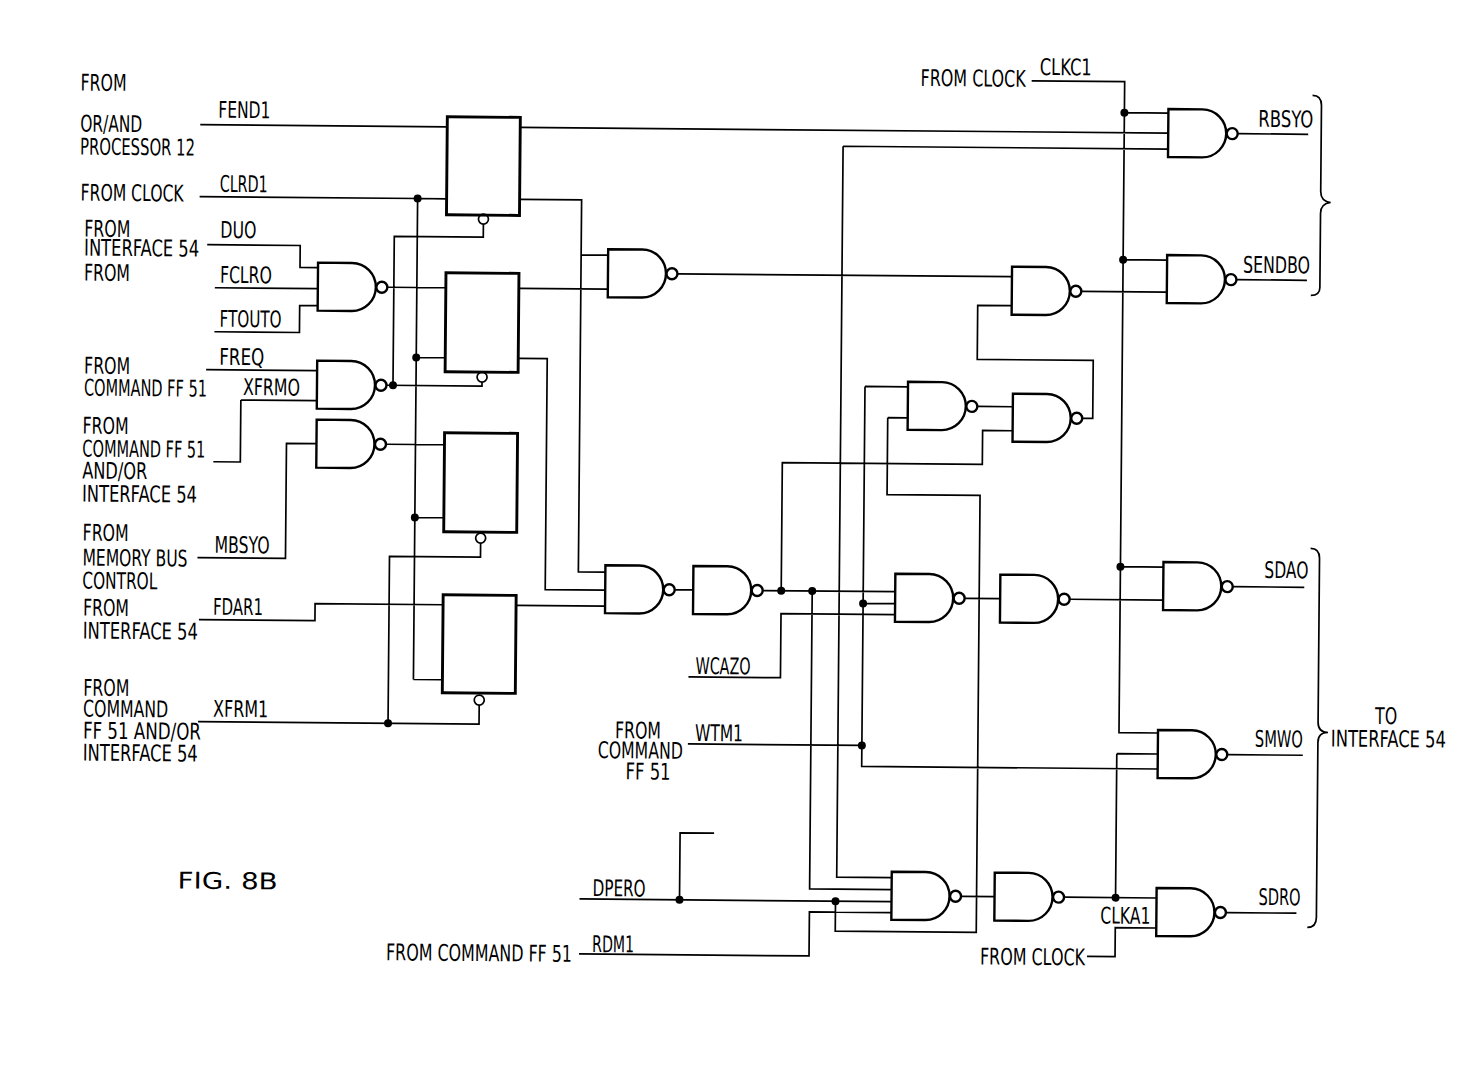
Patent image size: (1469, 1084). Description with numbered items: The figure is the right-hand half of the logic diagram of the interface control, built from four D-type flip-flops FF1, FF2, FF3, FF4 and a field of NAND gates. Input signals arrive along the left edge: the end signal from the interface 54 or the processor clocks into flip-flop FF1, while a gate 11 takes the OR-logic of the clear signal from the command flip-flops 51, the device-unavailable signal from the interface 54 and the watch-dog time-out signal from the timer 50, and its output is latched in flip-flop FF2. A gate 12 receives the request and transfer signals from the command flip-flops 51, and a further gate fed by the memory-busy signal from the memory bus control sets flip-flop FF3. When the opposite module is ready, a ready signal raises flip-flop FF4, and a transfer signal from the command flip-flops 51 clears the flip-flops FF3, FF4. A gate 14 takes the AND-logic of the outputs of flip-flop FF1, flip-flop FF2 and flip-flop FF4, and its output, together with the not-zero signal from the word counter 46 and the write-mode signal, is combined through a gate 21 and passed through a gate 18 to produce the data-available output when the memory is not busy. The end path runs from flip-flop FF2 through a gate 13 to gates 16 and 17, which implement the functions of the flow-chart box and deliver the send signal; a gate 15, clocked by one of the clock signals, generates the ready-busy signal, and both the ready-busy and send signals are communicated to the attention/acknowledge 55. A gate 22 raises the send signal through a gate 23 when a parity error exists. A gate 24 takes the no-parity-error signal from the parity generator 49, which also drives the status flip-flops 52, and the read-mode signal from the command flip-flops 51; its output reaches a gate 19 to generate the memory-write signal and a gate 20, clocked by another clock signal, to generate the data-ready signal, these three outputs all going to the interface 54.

The gate 11 is at (321, 268).
The gate 12 is at (346, 353).
The gate 13 is at (633, 256).
The gate 14 is at (624, 572).
The gate 15 is at (1190, 141).
The gate 16 is at (1034, 273).
The gate 17 is at (1190, 290).
The gate 18 is at (1188, 589).
The gate 19 is at (1185, 759).
The gate 20 is at (1184, 891).
The gate 21 is at (924, 576).
The gate 22 is at (936, 386).
The gate 23 is at (1054, 430).
The gate 24 is at (918, 878).
The flip-flop 1 FF1 is at (483, 171).
The flip-flop 2 FF2 is at (482, 328).
The flip-flop 3 FF3 is at (481, 488).
The flip-flop 4 FF4 is at (479, 650).
The word counter 46 is at (629, 676).
The parity generator 49 is at (483, 900).
The timer 50 is at (148, 329).
The command flip-flops 51 is at (145, 298).
The status flip-flops 52 is at (748, 838).
The interface 54 is at (137, 103).
The attention/acknowledge 55 is at (1391, 207).